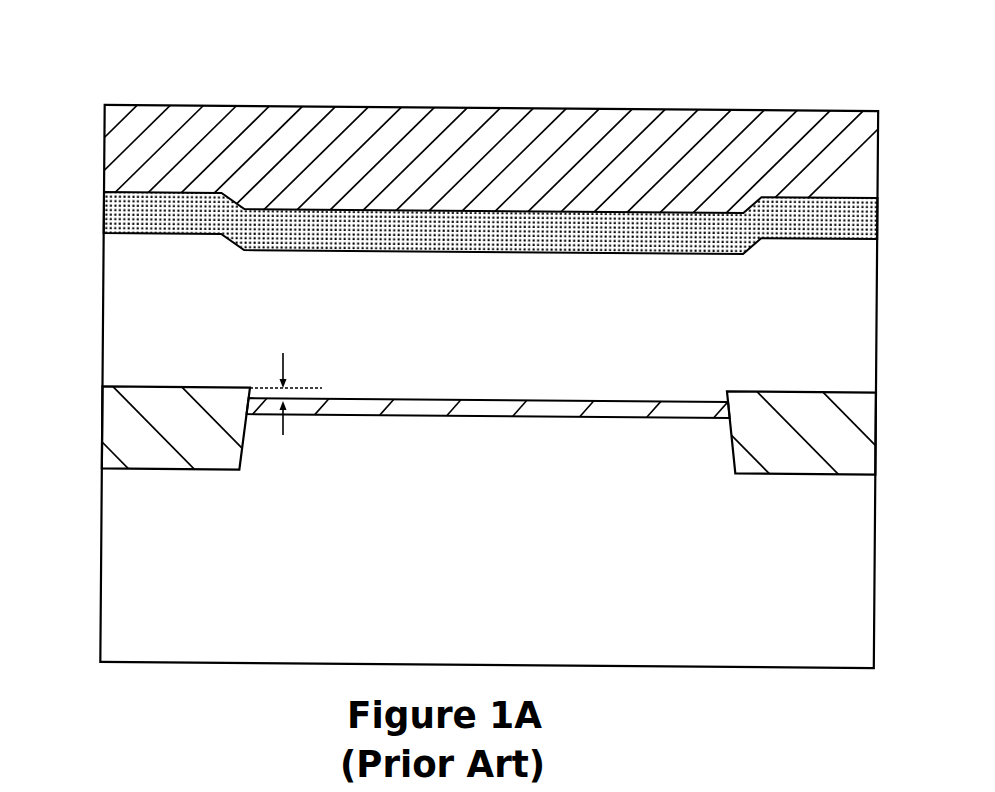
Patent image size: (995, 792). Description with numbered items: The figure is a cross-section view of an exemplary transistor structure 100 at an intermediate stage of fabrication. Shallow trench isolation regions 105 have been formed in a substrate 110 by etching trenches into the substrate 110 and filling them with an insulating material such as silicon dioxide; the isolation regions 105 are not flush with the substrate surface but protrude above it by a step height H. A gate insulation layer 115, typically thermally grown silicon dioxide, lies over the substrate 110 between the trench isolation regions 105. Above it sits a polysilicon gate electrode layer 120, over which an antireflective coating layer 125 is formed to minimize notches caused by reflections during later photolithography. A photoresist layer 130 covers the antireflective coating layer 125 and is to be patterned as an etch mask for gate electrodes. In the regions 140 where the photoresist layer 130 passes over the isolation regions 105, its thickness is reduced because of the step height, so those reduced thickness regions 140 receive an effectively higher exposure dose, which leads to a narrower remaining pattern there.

The transistor structure 100 is at (127, 61).
The shallow trench isolation regions 105 is at (100, 413).
The substrate 110 is at (100, 538).
The gate insulation layer 115 is at (432, 418).
The polysilicon gate electrode layer 120 is at (100, 277).
The antireflective coating (ARC) layer 125 is at (104, 208).
The photoresist layer 130 is at (104, 135).
The reduced thickness regions 140 is at (224, 133).